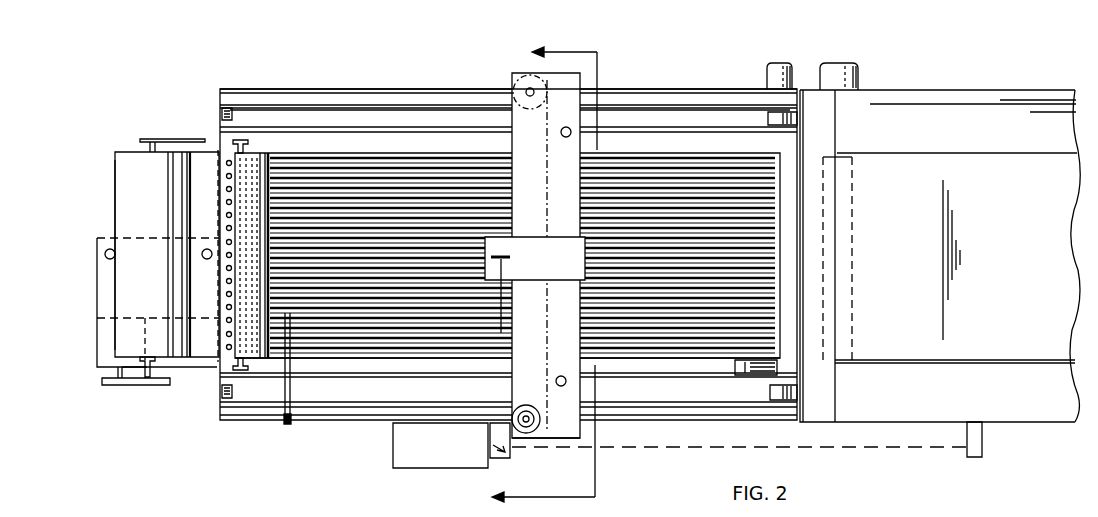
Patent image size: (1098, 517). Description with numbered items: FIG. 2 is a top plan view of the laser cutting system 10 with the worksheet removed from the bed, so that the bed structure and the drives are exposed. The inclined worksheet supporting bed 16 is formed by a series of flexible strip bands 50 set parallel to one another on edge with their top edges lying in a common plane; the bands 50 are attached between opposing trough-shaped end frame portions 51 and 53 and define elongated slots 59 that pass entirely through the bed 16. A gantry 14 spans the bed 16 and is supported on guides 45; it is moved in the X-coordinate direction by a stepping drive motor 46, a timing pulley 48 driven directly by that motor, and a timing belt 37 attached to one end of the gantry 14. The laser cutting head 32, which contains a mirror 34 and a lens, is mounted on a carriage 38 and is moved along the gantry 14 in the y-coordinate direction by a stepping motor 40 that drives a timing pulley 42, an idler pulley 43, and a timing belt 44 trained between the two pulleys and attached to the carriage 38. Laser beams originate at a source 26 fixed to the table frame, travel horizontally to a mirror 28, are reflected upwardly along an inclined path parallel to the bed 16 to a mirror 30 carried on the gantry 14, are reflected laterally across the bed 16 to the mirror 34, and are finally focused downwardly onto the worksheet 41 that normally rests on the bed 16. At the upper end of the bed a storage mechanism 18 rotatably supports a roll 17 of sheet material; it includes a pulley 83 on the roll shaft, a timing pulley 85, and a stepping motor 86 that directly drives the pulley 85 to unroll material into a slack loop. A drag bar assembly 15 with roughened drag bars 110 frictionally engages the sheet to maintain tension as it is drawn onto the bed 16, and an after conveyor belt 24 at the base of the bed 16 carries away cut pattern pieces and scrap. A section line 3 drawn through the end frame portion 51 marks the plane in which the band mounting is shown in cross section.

The laser cutting system 10 is at (333, 80).
The gantry 14 is at (556, 440).
The drag bar assembly 15 is at (310, 200).
The worksheet supporting bed 16 is at (333, 352).
The roll of sheet material 17 is at (115, 172).
The storage mechanism 18 is at (108, 205).
The after conveyor belt 24 is at (917, 343).
The source of laser beams 26 is at (395, 446).
The mirror 28 is at (984, 440).
The mirror 30 is at (494, 457).
The laser cutting head 32 is at (516, 239).
The mirror 34 is at (510, 258).
The timing belt 37 is at (418, 118).
The carriage 38 is at (525, 285).
The stepping motor 40 is at (528, 405).
The worksheet 41 is at (757, 377).
The timing pulley 42 is at (547, 420).
The idler pulley 43 is at (525, 78).
The timing belt 44 is at (548, 155).
The guides 45 is at (263, 103).
The stepping drive motor 46 is at (776, 63).
The timing pulley 48 is at (757, 110).
The flexible strip bands 50 is at (457, 186).
The end frame portion 51 is at (228, 168).
The end frame portion 53 is at (785, 216).
The elongated slots 59 is at (421, 202).
The pulley 83 is at (147, 385).
The timing pulley 85 is at (118, 386).
The stepping motor 86 is at (96, 342).
The drag bars 110 is at (275, 382).
The section line 3- 3 is at (555, 272).